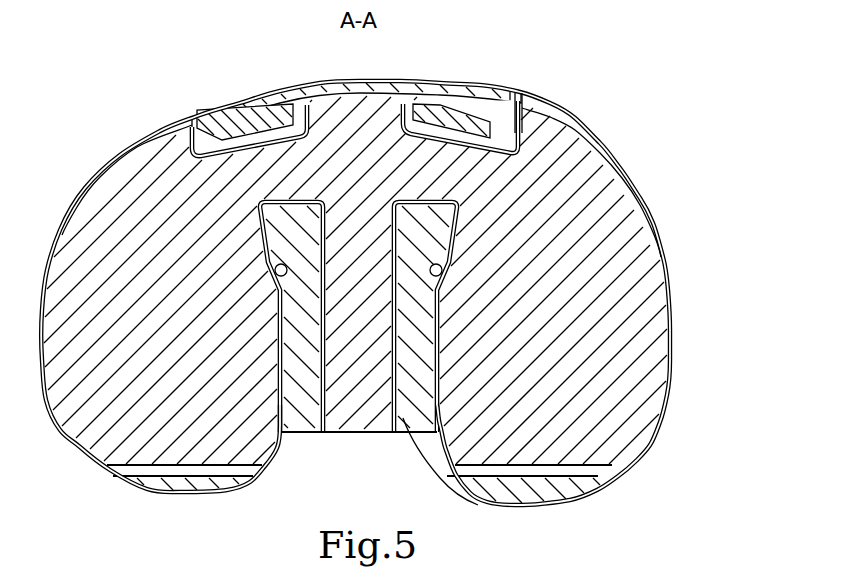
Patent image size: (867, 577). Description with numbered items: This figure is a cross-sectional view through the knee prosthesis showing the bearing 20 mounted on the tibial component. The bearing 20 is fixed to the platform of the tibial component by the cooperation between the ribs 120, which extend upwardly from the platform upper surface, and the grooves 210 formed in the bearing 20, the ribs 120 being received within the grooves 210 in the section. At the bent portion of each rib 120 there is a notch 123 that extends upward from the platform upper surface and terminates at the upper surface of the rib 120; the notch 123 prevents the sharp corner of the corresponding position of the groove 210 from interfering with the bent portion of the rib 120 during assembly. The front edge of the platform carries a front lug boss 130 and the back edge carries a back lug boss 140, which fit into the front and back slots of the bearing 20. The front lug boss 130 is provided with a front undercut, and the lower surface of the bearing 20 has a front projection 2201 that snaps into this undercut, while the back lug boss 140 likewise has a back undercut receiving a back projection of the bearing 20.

The bearing 20 is at (655, 357).
The front projection 2201 is at (473, 92).
The groove 210 is at (392, 206).
The rib 120 is at (413, 412).
The notch 123 is at (438, 268).
The back lug boss 140 is at (540, 503).
The front lug boss 130 is at (498, 92).